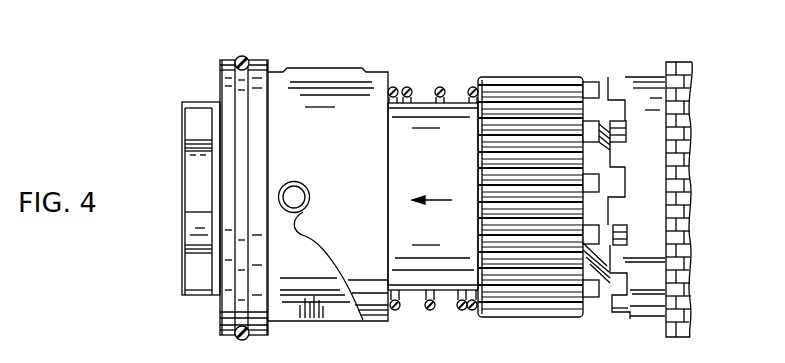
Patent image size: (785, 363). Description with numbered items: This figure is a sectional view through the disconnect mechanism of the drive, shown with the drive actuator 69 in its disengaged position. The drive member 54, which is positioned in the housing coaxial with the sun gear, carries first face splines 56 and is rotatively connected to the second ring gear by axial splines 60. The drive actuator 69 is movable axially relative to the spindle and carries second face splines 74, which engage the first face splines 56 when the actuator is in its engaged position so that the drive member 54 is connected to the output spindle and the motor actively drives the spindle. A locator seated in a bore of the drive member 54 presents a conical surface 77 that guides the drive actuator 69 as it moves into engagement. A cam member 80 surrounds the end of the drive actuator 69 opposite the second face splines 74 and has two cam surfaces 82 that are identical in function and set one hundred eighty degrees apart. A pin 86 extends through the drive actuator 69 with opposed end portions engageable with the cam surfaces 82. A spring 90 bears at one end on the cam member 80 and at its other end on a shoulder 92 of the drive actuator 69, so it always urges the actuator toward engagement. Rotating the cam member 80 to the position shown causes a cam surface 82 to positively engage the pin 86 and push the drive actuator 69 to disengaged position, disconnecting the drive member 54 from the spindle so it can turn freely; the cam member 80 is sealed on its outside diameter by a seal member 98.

The drive member 54 is at (650, 85).
The first face splines 56 is at (620, 110).
The axial splines 60 is at (686, 106).
The drive actuator 69 is at (442, 184).
The second face splines 74 is at (587, 134).
The conical surface 77 is at (600, 250).
The cam member 80 is at (303, 88).
The cam surfaces 82 is at (306, 222).
The pin 86 is at (303, 196).
The spring 90 is at (437, 91).
The shoulder 92 is at (478, 86).
The seal member 98 is at (243, 57).